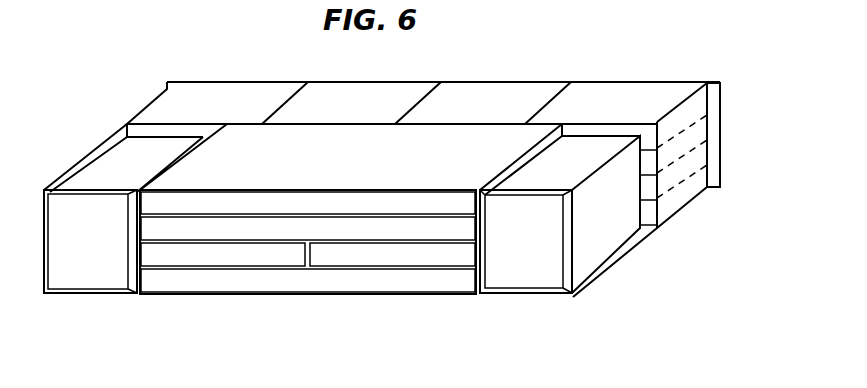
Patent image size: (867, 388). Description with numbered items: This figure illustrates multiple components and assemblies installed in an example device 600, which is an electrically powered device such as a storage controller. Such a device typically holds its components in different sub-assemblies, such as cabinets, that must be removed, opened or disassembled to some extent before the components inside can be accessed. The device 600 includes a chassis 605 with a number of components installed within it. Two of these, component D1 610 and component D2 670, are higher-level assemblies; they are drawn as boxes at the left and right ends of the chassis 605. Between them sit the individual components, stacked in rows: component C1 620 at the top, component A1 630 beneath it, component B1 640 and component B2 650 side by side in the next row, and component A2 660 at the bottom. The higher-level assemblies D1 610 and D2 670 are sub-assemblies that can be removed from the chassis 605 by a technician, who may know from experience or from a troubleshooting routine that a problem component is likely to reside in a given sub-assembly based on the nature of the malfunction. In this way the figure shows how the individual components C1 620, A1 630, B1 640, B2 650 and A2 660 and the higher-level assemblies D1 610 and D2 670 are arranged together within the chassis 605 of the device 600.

The device 600 is at (178, 62).
The chassis 605 is at (688, 83).
The component D1 610 is at (79, 279).
The component C1 620 is at (370, 200).
The component A1 630 is at (450, 230).
The component B1 640 is at (156, 254).
The component B2 650 is at (462, 257).
The component A2 660 is at (368, 280).
The component D2 670 is at (543, 278).